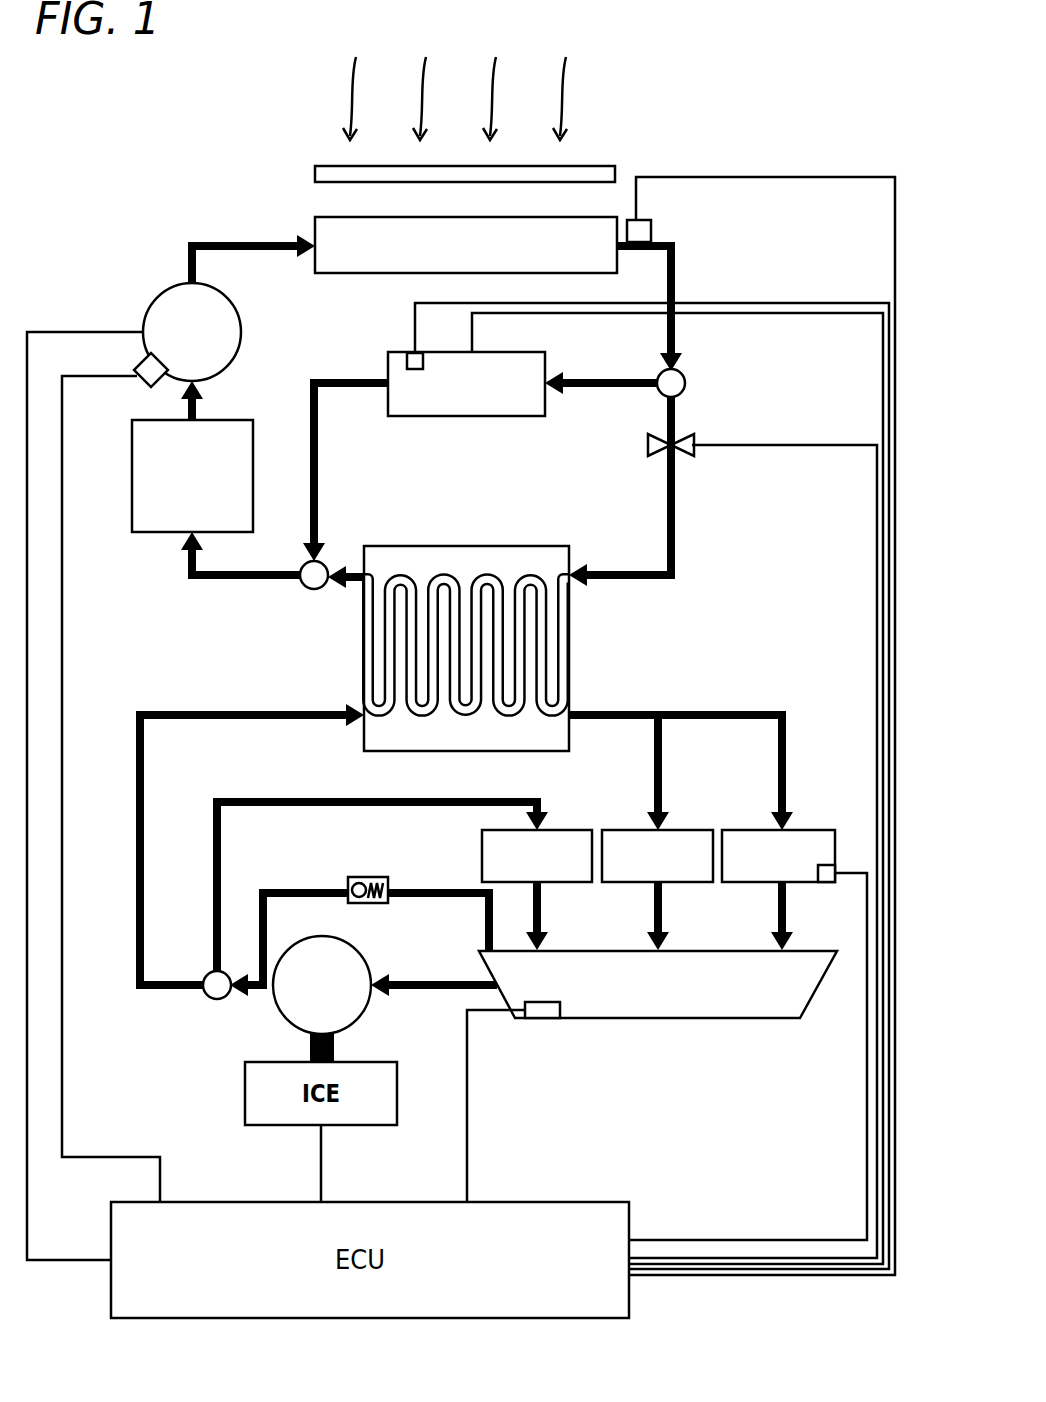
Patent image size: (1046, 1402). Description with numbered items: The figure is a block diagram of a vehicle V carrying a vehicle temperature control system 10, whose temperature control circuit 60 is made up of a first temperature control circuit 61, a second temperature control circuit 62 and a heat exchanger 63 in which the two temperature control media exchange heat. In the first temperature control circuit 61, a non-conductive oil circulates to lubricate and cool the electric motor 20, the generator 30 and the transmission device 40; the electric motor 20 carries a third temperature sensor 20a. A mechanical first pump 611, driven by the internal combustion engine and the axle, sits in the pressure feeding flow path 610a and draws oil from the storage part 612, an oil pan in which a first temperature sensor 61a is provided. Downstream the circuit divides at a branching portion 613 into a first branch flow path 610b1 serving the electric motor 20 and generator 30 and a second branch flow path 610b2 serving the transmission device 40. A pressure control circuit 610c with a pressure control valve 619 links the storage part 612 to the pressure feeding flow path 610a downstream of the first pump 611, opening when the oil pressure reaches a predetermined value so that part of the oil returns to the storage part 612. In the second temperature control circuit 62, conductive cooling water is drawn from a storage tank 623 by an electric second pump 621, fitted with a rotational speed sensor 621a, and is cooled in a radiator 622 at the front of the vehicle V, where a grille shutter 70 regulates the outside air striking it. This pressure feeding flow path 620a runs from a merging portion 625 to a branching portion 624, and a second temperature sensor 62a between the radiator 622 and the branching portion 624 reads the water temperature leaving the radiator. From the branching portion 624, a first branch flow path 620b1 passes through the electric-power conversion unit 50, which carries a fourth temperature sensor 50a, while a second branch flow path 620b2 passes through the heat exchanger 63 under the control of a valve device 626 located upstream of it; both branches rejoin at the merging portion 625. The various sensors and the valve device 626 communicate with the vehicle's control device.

The vehicle temperature control system 10 is at (268, 170).
The grille shutter 70 is at (328, 164).
The second temperature sensor 62a is at (636, 218).
The vehicle V is at (799, 145).
The temperature control circuit 60 is at (684, 231).
The pressure feeding flow path 620a is at (188, 246).
The second pump 621 is at (160, 298).
The radiator 622 is at (342, 275).
The rotational speed sensor 621a is at (150, 380).
The storage tank 623 is at (234, 420).
The first branch flow path 620b1 is at (604, 383).
The branching portion 624 is at (688, 383).
The fourth temperature sensor 50a is at (415, 370).
The electric-power conversion unit 50 is at (462, 417).
The valve device 626 is at (647, 444).
The second temperature control circuit 62 is at (694, 495).
The second branch flow path 620b2 is at (618, 575).
The merging portion 625 is at (312, 590).
The heat exchanger 63 is at (570, 640).
The first temperature control circuit 61 is at (719, 686).
The first branch flow path 610b1 is at (141, 780).
The transmission device 40 is at (556, 830).
The generator 30 is at (698, 830).
The electric motor 20 is at (816, 830).
The third temperature sensor 20a is at (826, 882).
The second branch flow path 610b2 is at (222, 870).
The pressure control circuit 610c is at (420, 890).
The pressure control valve 619 is at (358, 880).
The first pump 611 is at (300, 940).
The pressure feeding flow path 610a is at (425, 980).
The branching portion 613 is at (216, 1000).
The first temperature sensor 61a is at (540, 1018).
The storage part 612 is at (710, 1018).